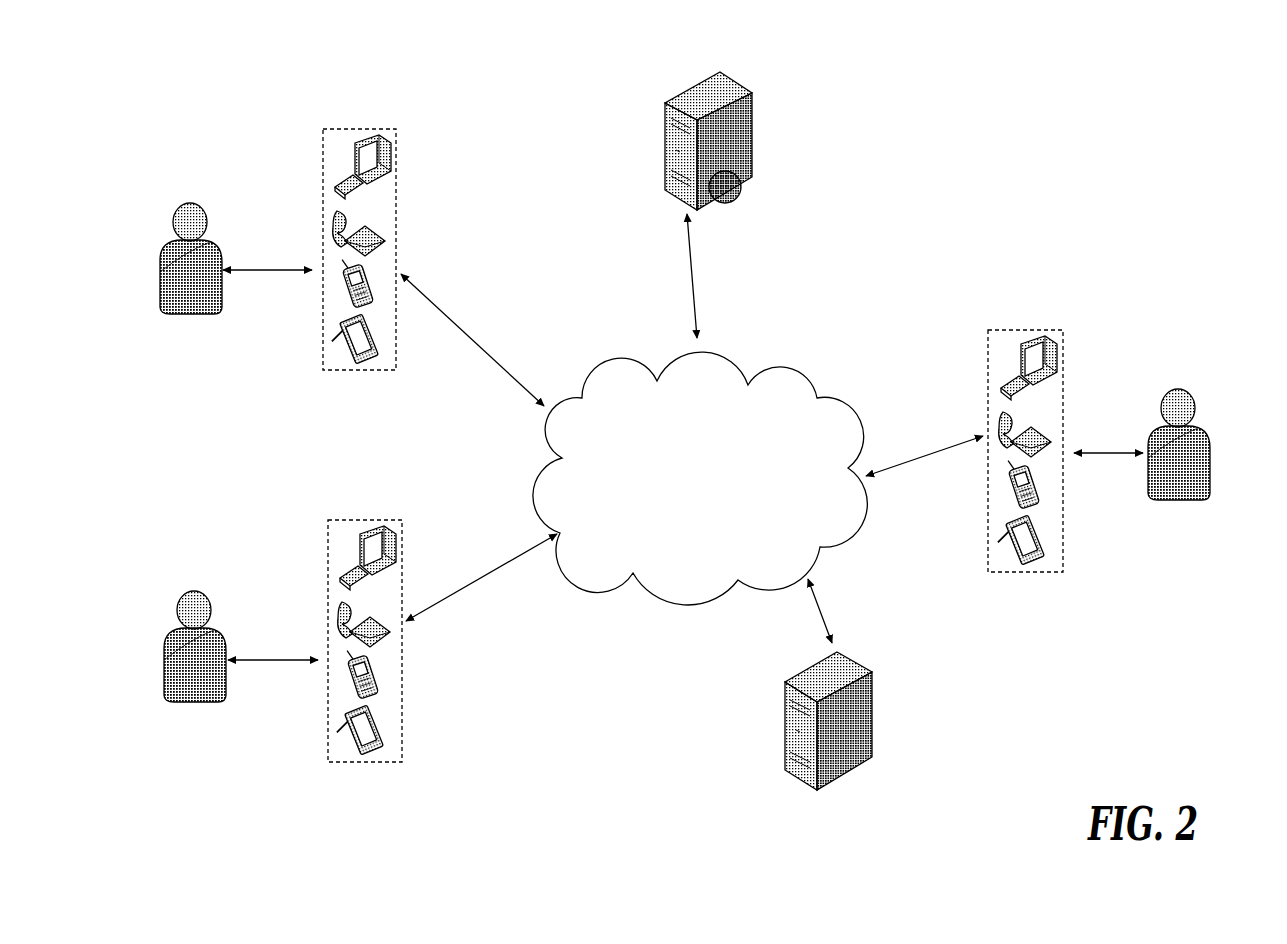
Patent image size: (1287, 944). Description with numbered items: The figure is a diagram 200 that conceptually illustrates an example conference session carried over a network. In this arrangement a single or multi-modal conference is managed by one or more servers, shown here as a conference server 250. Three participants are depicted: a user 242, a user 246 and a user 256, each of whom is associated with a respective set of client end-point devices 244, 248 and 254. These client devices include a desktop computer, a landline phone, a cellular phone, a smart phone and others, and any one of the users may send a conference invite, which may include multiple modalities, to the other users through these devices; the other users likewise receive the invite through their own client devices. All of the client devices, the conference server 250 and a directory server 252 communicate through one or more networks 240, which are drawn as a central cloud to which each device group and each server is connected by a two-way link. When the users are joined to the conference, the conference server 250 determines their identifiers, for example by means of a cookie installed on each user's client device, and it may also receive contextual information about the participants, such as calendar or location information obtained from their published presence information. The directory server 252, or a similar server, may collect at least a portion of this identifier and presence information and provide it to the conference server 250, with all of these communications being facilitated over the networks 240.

The diagram 200 is at (1146, 77).
The networks 240 is at (607, 350).
The user 242 is at (194, 197).
The client devices 244 is at (340, 114).
The user 246 is at (197, 588).
The client devices 248 is at (344, 504).
The conference server 250 is at (667, 94).
The directory server 252 is at (784, 650).
The client devices 254 is at (1002, 314).
The user 256 is at (1180, 379).